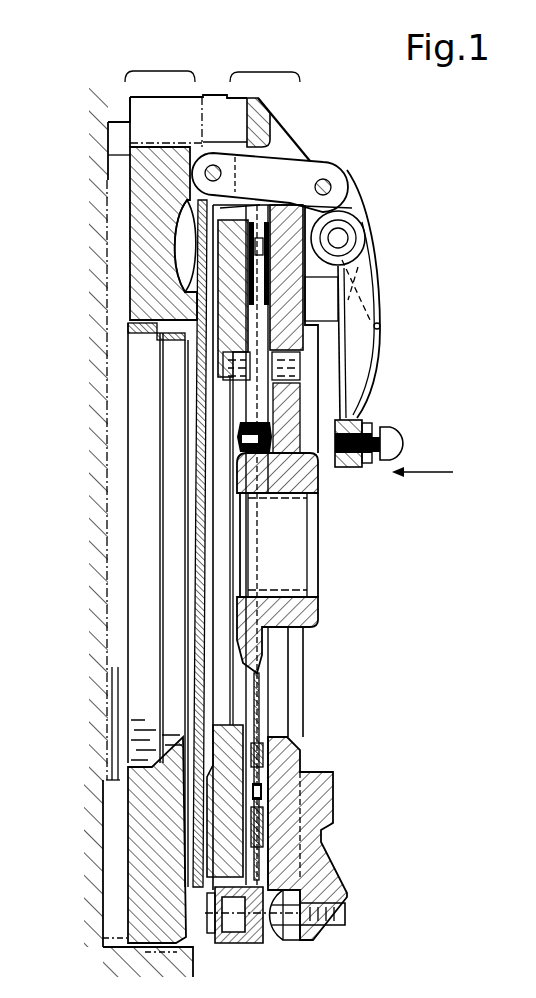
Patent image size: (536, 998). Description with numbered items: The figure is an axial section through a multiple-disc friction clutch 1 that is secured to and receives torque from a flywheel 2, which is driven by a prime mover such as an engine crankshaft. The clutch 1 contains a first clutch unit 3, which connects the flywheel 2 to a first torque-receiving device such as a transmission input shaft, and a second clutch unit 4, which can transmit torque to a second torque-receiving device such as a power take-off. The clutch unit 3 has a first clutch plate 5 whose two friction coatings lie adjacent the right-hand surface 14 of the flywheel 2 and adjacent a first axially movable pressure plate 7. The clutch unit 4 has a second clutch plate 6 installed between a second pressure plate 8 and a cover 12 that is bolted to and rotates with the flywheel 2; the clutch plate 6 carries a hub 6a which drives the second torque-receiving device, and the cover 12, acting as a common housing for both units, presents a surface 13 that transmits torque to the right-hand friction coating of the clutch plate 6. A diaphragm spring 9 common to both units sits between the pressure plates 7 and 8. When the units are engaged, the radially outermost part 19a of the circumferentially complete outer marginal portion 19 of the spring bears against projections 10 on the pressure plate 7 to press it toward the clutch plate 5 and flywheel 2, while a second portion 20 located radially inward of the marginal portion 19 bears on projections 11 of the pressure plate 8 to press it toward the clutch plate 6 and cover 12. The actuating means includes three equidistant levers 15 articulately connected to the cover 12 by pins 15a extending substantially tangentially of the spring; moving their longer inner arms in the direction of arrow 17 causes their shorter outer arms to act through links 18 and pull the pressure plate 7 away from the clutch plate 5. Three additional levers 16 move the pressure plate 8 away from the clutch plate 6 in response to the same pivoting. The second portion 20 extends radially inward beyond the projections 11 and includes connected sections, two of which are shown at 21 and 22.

The multiple-disc friction clutch 1 is at (208, 29).
The flywheel 2 is at (123, 117).
The first clutch unit 3 is at (151, 70).
The second clutch unit 4 is at (280, 72).
The first clutch plate 5 is at (110, 191).
The second clutch plate 6 is at (266, 762).
The hub 6a is at (316, 614).
The first pressure plate 7 is at (150, 272).
The second pressure plate 8 is at (253, 737).
The diaphragm spring 9 is at (183, 743).
The projections 10 is at (185, 212).
The projections 11 is at (205, 792).
The cover 12 is at (203, 115).
The surface 13 is at (272, 769).
The right-hand surface 14 is at (105, 485).
The levers 15 is at (347, 417).
The pins 15a is at (343, 237).
The additional levers 16 is at (240, 943).
The arrow 17 is at (422, 457).
The links 18 is at (290, 168).
The outer marginal portion 19 is at (150, 320).
The radially outermost part 19a is at (228, 198).
The second portion 20 is at (196, 279).
The section 21 is at (198, 355).
The section 22 is at (194, 657).